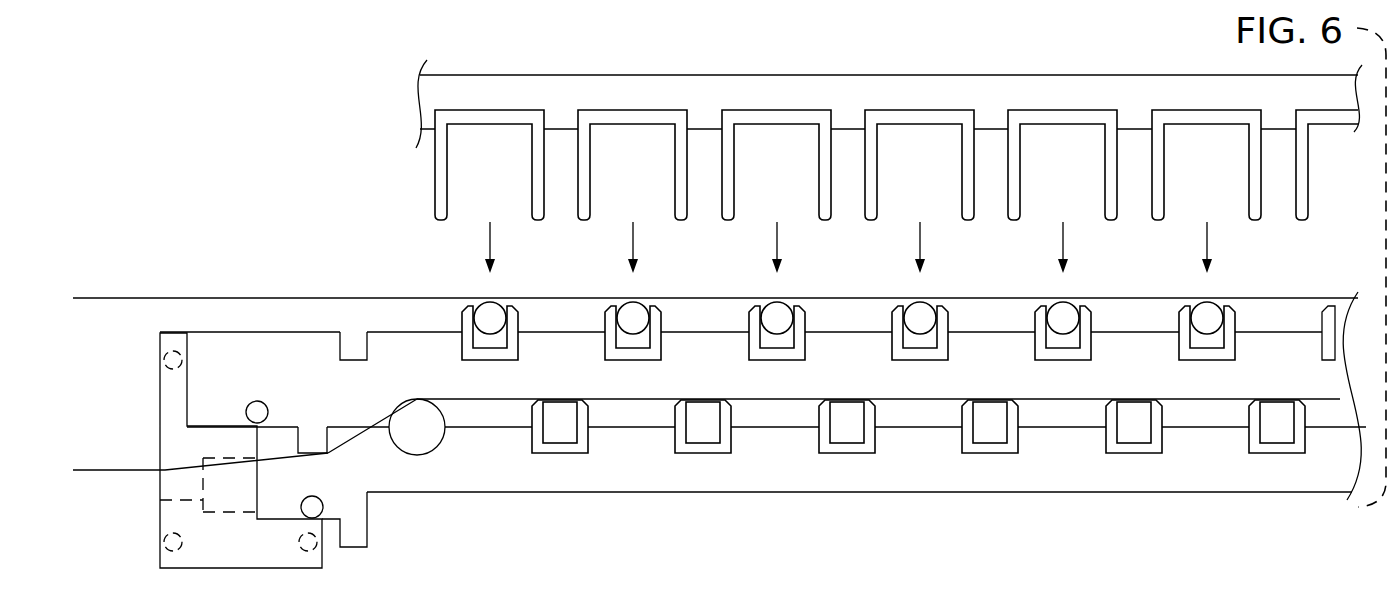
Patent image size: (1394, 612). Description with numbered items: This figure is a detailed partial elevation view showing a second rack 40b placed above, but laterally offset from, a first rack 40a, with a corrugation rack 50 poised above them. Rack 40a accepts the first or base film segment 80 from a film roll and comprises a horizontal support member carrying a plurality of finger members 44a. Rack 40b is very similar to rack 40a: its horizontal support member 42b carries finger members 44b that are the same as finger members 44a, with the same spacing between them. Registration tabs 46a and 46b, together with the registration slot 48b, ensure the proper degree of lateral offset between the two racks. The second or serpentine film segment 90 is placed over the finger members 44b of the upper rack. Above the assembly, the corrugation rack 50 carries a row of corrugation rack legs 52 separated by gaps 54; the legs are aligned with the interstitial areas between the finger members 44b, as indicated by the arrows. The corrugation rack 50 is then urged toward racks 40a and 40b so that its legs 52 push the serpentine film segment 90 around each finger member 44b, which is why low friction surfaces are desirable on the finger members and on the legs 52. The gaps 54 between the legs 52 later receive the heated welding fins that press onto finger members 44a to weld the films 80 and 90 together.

The corrugation rack 50 is at (707, 90).
The corrugation rack legs 52 is at (868, 191).
The gaps 54 is at (1288, 185).
The serpentine film segment 90 is at (108, 298).
The rack 40b is at (270, 322).
The horizontal support member 42b is at (220, 356).
The registration slot 48b is at (352, 352).
The finger members 44b is at (839, 349).
The registration tab 46b is at (310, 440).
The base film segment 80 is at (95, 470).
The finger members 44a is at (910, 445).
The registration tab 46a is at (367, 532).
The rack 40a is at (891, 500).